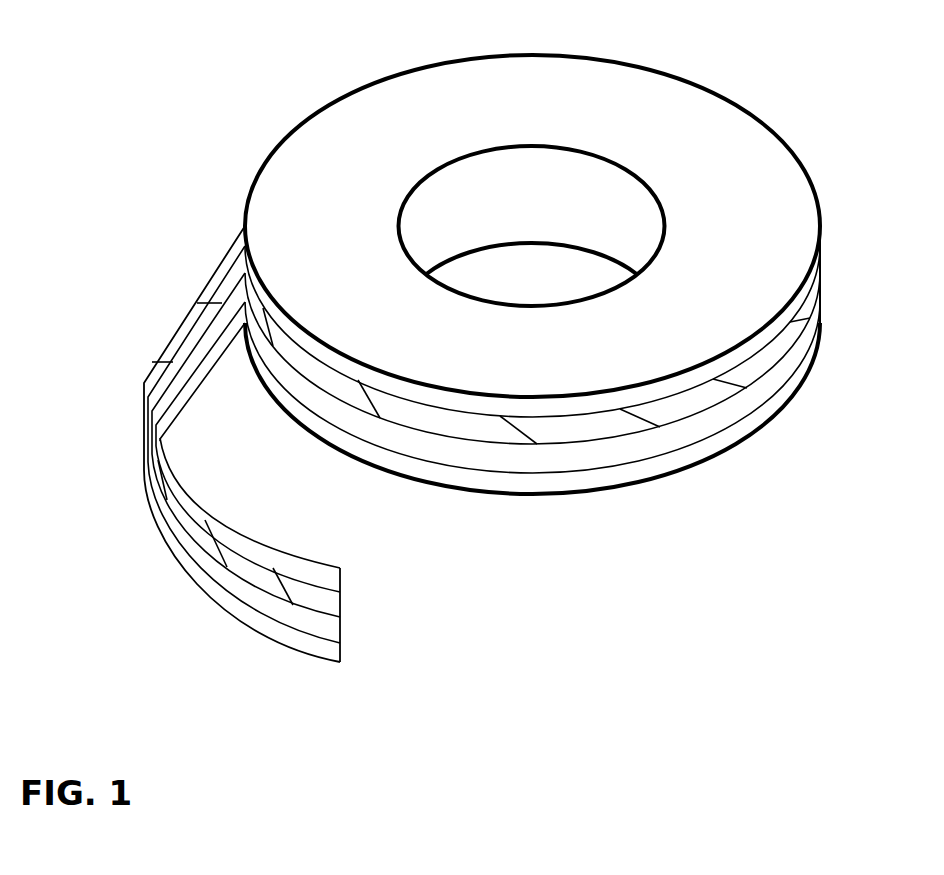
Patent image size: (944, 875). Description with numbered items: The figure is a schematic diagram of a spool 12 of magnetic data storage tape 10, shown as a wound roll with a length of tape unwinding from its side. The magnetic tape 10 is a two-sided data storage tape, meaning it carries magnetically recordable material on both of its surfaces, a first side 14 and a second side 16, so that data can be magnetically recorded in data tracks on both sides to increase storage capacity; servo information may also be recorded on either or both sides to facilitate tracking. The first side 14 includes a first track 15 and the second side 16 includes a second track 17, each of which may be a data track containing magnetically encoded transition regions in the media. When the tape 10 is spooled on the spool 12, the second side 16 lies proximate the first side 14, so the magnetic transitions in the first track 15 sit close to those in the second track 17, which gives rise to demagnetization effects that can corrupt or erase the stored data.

The magnetic data storage tape 10 is at (400, 534).
The spool 12 is at (665, 133).
The first side 14 is at (223, 580).
The first track 15 is at (772, 357).
The second side 16 is at (188, 360).
The second track 17 is at (191, 328).